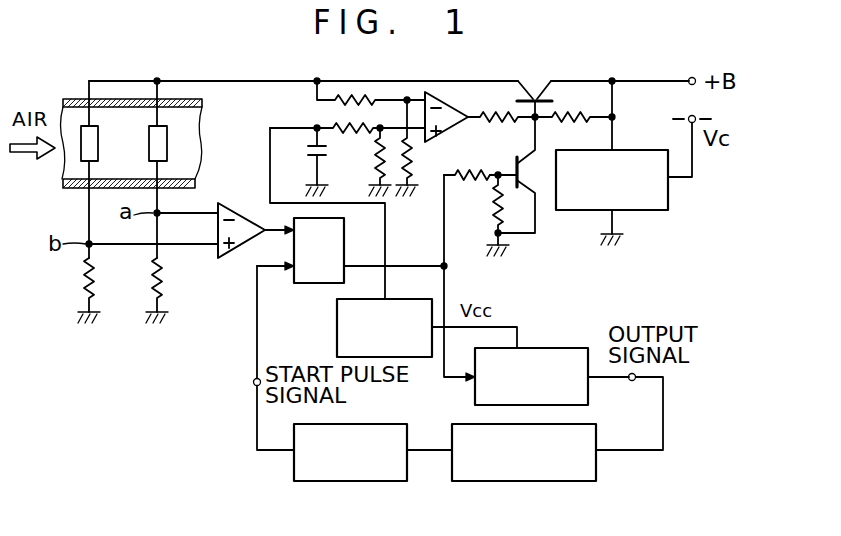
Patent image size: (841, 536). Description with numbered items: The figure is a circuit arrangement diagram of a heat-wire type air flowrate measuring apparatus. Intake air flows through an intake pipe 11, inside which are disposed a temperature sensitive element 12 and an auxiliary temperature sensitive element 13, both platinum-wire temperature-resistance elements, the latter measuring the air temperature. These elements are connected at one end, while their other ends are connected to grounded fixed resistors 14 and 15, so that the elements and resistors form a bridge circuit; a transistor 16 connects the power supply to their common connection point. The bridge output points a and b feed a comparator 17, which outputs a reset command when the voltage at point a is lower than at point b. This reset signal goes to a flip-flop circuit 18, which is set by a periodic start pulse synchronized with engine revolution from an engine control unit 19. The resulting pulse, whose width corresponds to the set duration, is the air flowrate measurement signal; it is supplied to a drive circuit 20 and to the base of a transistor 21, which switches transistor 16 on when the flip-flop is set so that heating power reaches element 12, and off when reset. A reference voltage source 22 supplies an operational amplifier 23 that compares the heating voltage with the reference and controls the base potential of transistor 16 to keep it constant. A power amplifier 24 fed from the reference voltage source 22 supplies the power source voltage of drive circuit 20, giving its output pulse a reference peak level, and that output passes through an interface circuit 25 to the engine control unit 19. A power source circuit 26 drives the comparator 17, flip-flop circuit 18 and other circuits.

The intake pipe 11 is at (76, 98).
The temperature sensitive element 12 is at (163, 138).
The auxiliary temperature sensitive element 13 is at (92, 148).
The fixed resistor 14 is at (163, 284).
The fixed resistor 15 is at (82, 286).
The transistor 16 is at (537, 88).
The comparator 17 is at (229, 210).
The flip-flop circuit 18 is at (362, 244).
The engine control unit 19 is at (405, 431).
The drive circuit 20 is at (556, 347).
The transistor 21 is at (515, 166).
The reference voltage source 22 is at (324, 156).
The operational amplifier 23 is at (442, 95).
The power amplifier 24 is at (336, 319).
The interface circuit 25 is at (594, 434).
The power source circuit 26 is at (646, 212).